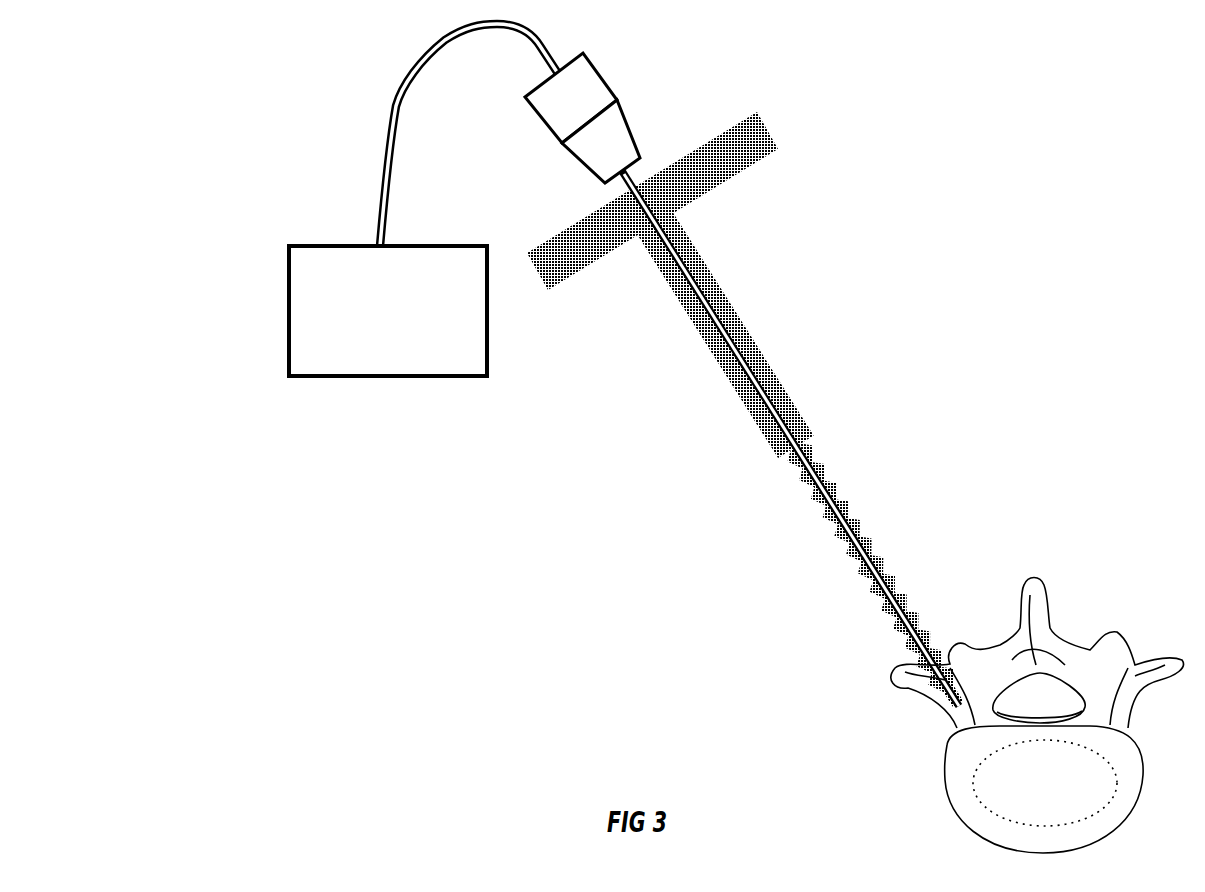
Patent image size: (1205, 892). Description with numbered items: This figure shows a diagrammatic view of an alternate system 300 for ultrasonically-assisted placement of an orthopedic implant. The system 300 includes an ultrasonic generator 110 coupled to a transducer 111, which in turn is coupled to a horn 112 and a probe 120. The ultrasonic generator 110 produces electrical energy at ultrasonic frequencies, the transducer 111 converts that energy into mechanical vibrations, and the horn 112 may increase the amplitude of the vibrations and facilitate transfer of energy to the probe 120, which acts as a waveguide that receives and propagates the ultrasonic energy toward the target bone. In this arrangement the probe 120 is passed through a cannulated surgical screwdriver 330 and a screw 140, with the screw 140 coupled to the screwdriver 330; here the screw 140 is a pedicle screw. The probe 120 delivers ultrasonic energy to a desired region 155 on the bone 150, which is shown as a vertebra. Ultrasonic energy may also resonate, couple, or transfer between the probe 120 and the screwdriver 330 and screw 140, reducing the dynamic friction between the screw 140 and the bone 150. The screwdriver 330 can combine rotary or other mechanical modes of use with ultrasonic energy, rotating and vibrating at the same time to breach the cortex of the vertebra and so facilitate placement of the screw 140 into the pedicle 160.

The system 300 is at (73, 29).
The ultrasonic generator 110 is at (440, 388).
The transducer 111 is at (607, 81).
The horn 112 is at (579, 173).
The probe 120 is at (636, 175).
The cannulated surgical screwdriver 330 is at (718, 271).
The screw 140 is at (838, 488).
The bone 150 is at (1090, 637).
The desired region 155 is at (957, 713).
The pedicle 160 is at (973, 726).